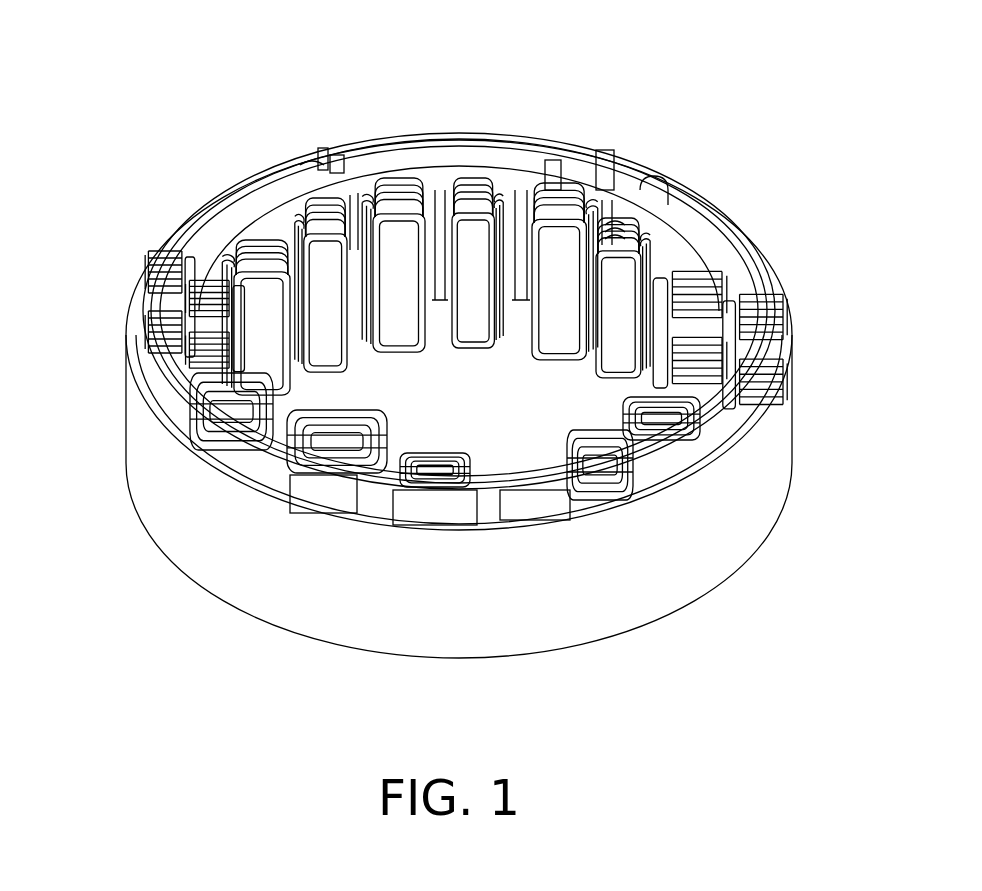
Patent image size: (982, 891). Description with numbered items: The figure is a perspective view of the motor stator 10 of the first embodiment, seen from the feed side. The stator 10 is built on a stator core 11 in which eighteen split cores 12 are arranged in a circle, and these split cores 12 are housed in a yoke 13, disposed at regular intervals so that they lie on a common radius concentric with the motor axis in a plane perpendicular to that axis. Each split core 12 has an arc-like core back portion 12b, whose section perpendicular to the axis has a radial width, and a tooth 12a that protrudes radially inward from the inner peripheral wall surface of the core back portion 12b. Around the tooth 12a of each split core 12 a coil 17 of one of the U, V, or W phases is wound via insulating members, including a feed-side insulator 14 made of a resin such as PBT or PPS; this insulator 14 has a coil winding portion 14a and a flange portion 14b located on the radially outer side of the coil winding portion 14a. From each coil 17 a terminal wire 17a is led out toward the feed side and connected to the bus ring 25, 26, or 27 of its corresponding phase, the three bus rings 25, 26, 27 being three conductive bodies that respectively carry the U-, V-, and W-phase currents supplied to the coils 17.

The motor stator 10 is at (431, 344).
The stator core 11 is at (443, 200).
The split core 12 is at (466, 339).
The tooth 12a is at (477, 312).
The core back portion 12b is at (440, 283).
The yoke 13 is at (150, 487).
The insulator 14 is at (607, 98).
The coil winding portion 14a is at (553, 170).
The flange portion 14b is at (603, 185).
The coil 17 is at (618, 220).
The terminal wire 17a is at (655, 187).
The bus ring 25 is at (337, 163).
The bus ring 26 is at (330, 150).
The bus ring 27 is at (313, 162).